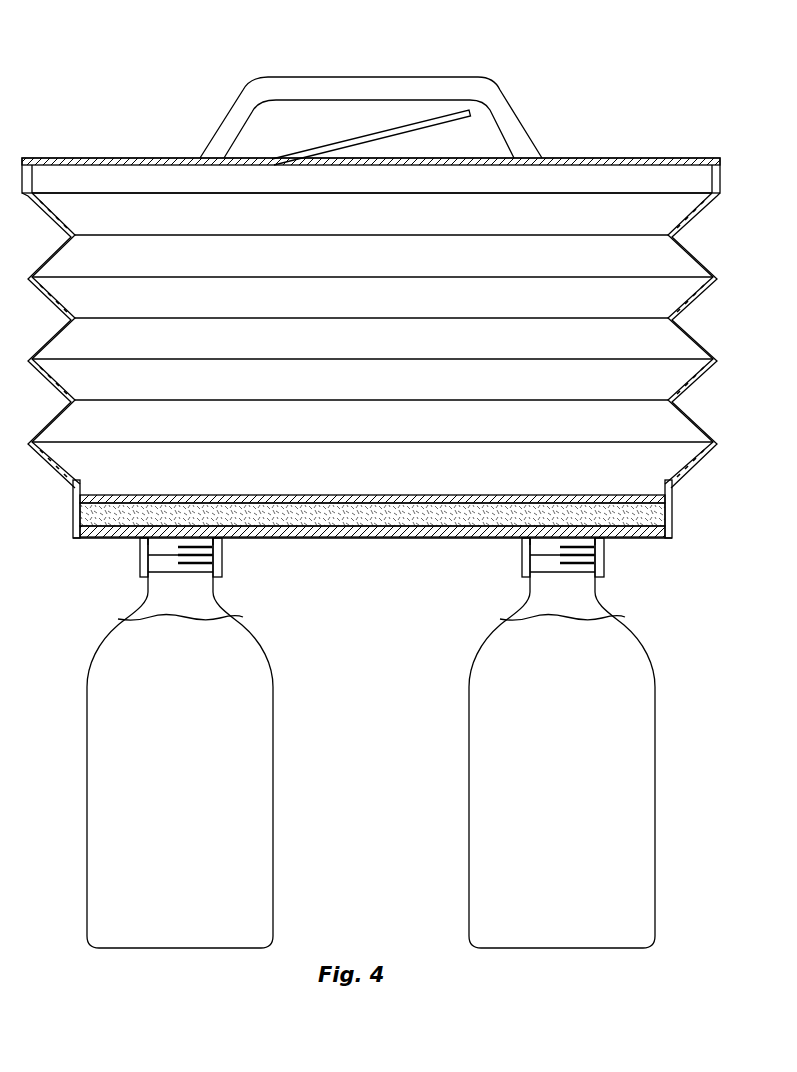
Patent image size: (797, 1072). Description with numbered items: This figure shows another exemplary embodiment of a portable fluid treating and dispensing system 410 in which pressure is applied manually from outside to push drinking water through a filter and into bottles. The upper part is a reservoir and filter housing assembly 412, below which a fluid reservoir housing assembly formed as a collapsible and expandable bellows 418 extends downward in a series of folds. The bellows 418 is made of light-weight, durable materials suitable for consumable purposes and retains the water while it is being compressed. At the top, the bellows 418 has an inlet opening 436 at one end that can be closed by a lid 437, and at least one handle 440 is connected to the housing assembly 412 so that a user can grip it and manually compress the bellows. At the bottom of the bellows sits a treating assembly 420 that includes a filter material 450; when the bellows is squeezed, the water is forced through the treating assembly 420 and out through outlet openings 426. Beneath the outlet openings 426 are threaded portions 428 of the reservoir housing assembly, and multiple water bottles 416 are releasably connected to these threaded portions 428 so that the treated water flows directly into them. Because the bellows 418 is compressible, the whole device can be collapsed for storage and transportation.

The fluid treating and dispensing system 410 is at (580, 57).
The reservoir and filter housing assembly 412 is at (617, 155).
The water bottles 416 is at (262, 775).
The collapsible and expandable bellows 418 is at (689, 248).
The treating assembly 420 is at (290, 492).
The outlet openings 426 is at (183, 535).
The threaded portions 428 is at (222, 563).
The inlet opening 436 is at (428, 166).
The lid 437 is at (441, 114).
The handle 440 is at (322, 85).
The filter material 450 is at (393, 512).